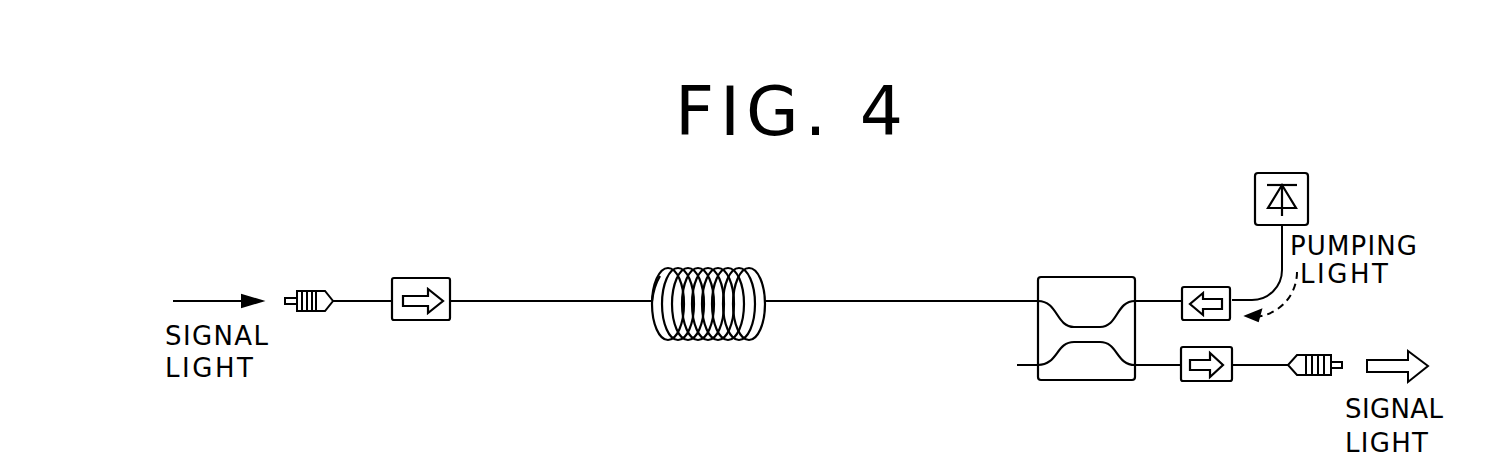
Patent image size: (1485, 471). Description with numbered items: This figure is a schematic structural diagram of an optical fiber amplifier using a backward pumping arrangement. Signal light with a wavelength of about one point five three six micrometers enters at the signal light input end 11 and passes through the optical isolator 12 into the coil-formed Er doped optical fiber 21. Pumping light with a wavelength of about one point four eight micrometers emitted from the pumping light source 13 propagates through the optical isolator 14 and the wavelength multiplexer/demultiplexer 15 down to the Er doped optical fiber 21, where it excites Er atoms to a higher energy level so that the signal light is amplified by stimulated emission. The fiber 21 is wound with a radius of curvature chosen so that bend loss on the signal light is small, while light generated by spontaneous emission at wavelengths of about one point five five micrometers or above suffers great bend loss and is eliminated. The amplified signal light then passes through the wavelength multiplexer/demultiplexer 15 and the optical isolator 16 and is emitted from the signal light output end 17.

The signal light input end 11 is at (306, 283).
The optical isolator 12 is at (420, 278).
The coil-formed Er doped optical fiber 21 is at (700, 268).
The wavelength multiplexer/demultiplexer 15 is at (1082, 277).
The optical isolator 14 is at (1202, 287).
The pumping light source 13 is at (1280, 173).
The optical isolator 16 is at (1205, 381).
The signal light output end 17 is at (1302, 375).